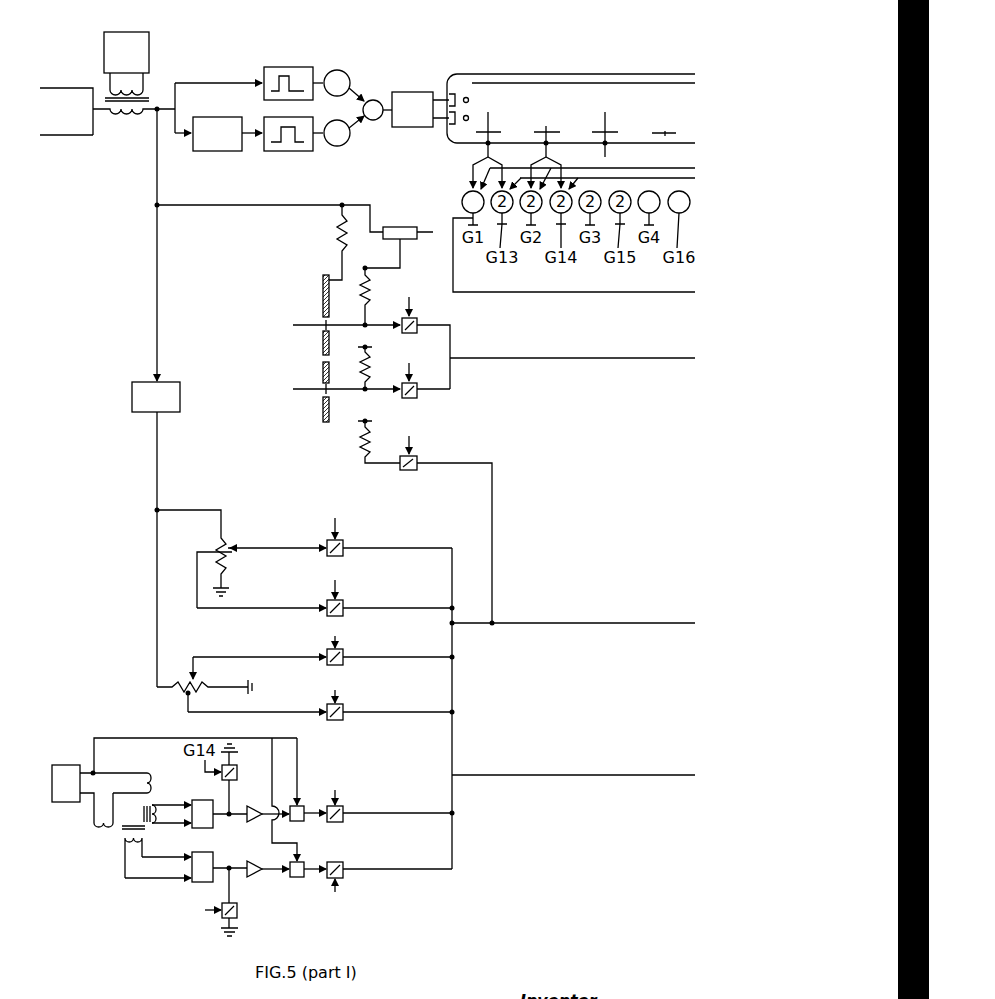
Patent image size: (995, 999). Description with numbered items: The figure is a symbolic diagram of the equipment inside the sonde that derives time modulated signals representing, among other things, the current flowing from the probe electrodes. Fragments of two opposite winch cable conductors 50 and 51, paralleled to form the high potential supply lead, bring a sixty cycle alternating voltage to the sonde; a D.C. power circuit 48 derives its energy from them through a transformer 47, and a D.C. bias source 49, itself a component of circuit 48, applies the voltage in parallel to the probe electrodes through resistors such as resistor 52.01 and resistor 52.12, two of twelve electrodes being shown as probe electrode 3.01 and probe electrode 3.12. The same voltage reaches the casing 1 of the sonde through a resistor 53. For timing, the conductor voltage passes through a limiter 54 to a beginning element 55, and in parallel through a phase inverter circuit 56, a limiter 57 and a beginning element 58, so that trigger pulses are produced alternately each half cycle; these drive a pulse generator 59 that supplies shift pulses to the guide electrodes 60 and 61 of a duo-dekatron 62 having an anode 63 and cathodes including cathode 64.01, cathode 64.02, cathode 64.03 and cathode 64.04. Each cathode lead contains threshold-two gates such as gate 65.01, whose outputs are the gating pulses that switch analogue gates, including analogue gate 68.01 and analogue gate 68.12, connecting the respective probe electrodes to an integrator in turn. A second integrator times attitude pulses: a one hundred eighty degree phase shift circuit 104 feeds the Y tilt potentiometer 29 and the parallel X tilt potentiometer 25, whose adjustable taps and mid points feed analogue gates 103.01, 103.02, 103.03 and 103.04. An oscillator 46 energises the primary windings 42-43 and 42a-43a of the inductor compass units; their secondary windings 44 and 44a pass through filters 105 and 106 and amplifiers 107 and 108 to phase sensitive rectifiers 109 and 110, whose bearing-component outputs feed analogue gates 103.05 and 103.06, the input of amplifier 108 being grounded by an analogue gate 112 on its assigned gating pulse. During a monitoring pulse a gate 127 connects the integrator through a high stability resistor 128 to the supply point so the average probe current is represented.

The casing 1 is at (322, 301).
The probe electrode 3.01 is at (326, 325).
The probe electrode 3.12 is at (326, 389).
The X tilt potentiometer 25 is at (176, 683).
The Y tilt potentiometer 29 is at (222, 540).
The primary windings 42-43 is at (146, 774).
The primary windings 42a-43a is at (101, 830).
The secondary winding 44 is at (160, 808).
The secondary winding 44a is at (133, 841).
The oscillator 46 is at (63, 804).
The transformer 47 is at (116, 113).
The D.C. power circuit 48 is at (126, 66).
The D.C. bias source 49 is at (399, 238).
The conductor 50 is at (66, 102).
The conductor 51 is at (66, 126).
The resistor 52.01 is at (376, 296).
The resistor 52.12 is at (375, 367).
The resistor 53 is at (338, 238).
The limiter 54 is at (289, 67).
The beginning element 55 is at (341, 70).
The phase inverter circuit 56 is at (236, 151).
The limiter 57 is at (290, 151).
The beginning element 58 is at (342, 146).
The pulse generator 59 is at (412, 109).
The guide electrode 60 is at (465, 96).
The guide electrode 61 is at (465, 122).
The duo-dekatron 62 is at (521, 73).
The anode 63 is at (580, 82).
The cathode 64.01 is at (499, 140).
The cathode 64.02 is at (550, 148).
The cathode 64.03 is at (621, 125).
The cathode 64.04 is at (663, 122).
The gate 65.01 is at (462, 199).
The analogue gate 68.01 is at (418, 323).
The analogue gate 68.12 is at (418, 396).
The 180° phase shift circuit 104 is at (180, 403).
The filter 105 is at (200, 828).
The filter 106 is at (200, 880).
The amplifier 107 is at (258, 801).
The amplifier 108 is at (254, 861).
The phase sensitive rectifier 109 is at (304, 822).
The phase sensitive rectifier 110 is at (304, 878).
The analogue gate 112 is at (238, 915).
The gate 127 is at (444, 525).
The high stability resistor 128 is at (362, 441).
The analogue gate 103.01 is at (345, 541).
The analogue gate 103.02 is at (345, 601).
The analogue gate 103.03 is at (345, 650).
The analogue gate 103.04 is at (345, 705).
The analogue gate 103.05 is at (345, 809).
The analogue gate 103.06 is at (345, 863).